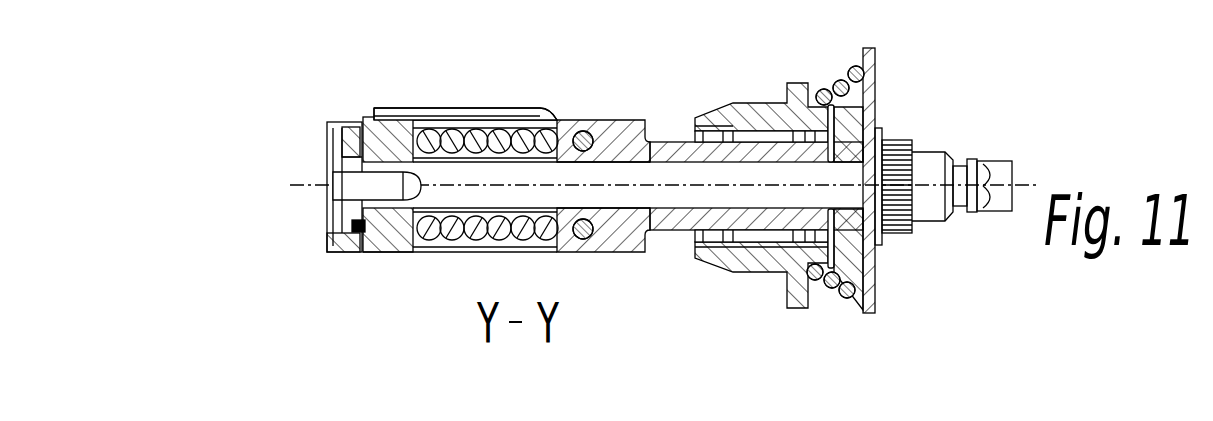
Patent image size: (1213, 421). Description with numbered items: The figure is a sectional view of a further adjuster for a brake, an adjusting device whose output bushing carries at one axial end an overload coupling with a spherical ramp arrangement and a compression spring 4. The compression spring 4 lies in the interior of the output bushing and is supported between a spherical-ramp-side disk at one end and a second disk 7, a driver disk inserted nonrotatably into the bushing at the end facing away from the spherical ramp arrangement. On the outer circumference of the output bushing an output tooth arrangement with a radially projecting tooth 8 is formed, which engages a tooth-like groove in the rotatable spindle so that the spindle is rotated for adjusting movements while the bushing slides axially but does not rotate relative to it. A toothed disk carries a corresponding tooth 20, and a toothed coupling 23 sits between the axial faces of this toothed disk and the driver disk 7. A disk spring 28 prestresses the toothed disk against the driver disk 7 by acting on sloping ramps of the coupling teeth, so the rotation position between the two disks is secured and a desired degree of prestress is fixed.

The compression spring 4 is at (516, 122).
The second disk 7 is at (398, 254).
The tooth 8 is at (455, 108).
The tooth 20 is at (345, 120).
The toothed coupling 23 is at (370, 252).
The disk spring 28 is at (327, 132).